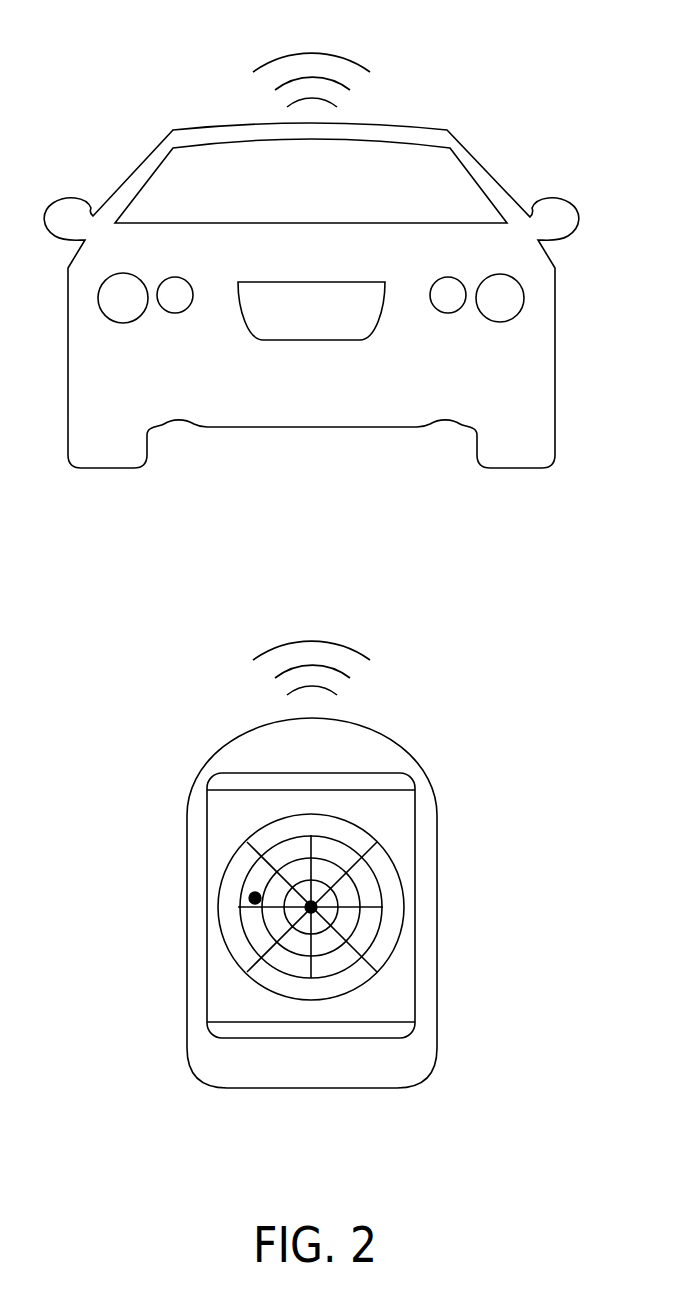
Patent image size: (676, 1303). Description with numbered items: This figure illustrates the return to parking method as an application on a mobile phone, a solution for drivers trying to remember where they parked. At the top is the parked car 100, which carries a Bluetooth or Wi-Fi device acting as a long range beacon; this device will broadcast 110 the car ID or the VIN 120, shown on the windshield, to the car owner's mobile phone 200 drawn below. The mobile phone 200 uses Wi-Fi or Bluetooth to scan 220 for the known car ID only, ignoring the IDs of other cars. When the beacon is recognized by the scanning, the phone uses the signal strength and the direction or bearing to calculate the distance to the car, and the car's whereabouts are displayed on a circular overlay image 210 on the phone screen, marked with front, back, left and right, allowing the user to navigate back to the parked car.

The car 100 is at (145, 157).
The broadcast 110 is at (312, 53).
The VIN 120 is at (462, 203).
The mobile phone 200 is at (215, 747).
The circular overlay image 210 is at (395, 852).
The scan 220 is at (312, 640).